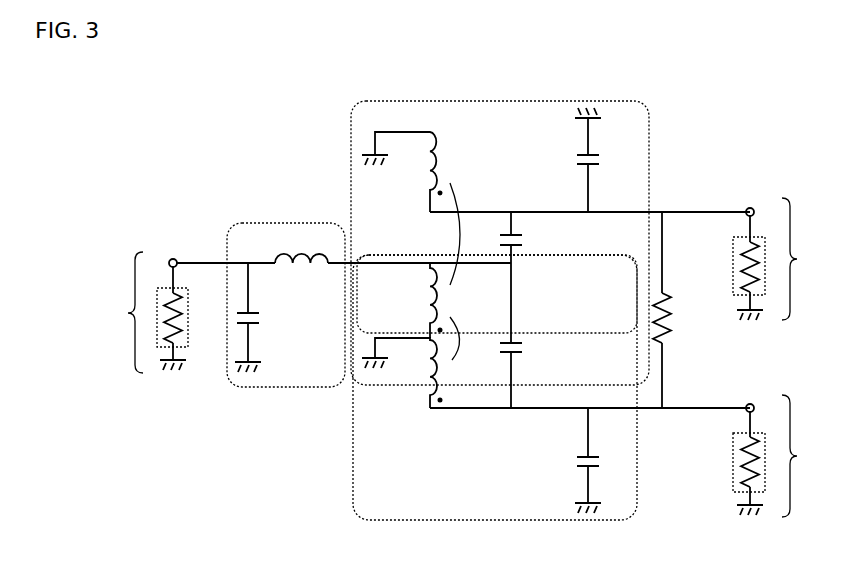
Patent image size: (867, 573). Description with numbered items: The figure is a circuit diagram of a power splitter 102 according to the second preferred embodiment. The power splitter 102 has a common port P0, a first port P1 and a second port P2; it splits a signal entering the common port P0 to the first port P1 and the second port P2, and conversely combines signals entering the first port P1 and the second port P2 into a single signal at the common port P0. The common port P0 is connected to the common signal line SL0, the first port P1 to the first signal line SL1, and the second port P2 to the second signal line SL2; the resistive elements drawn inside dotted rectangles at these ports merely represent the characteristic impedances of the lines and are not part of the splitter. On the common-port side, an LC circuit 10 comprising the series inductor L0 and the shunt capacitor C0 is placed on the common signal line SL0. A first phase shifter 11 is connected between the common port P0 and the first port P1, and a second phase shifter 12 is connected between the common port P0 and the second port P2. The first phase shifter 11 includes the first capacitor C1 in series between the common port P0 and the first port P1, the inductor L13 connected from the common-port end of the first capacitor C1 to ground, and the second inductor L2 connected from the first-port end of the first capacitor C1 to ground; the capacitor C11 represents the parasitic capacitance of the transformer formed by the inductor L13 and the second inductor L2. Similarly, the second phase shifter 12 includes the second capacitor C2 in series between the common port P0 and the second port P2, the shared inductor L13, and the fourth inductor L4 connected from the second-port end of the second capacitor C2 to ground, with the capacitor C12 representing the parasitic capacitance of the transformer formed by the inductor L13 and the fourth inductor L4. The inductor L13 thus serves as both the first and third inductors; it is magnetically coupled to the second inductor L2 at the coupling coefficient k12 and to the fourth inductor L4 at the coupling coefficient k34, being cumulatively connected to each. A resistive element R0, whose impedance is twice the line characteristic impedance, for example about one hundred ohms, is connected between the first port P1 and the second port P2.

The power splitter 102 is at (250, 100).
The LC circuit 10 is at (283, 222).
The first phase shifter 11 is at (487, 521).
The second phase shifter 12 is at (490, 100).
The common signal line SL0 is at (203, 262).
The first signal line SL1 is at (693, 408).
The second signal line SL2 is at (693, 212).
The inductor L0 is at (301, 247).
The capacitor C0 is at (262, 317).
The fourth inductor L4 is at (402, 172).
The inductor L13 is at (416, 300).
The second inductor L2 is at (402, 373).
The coupling coefficient k34 is at (438, 234).
The coupling coefficient k12 is at (475, 347).
The first capacitor C1 is at (529, 372).
The second capacitor C2 is at (529, 277).
The capacitor C11 is at (607, 460).
The capacitor C12 is at (607, 160).
The resistive element R0 is at (678, 310).
The common port P0 is at (139, 312).
The first port P1 is at (785, 456).
The second port P2 is at (785, 259).